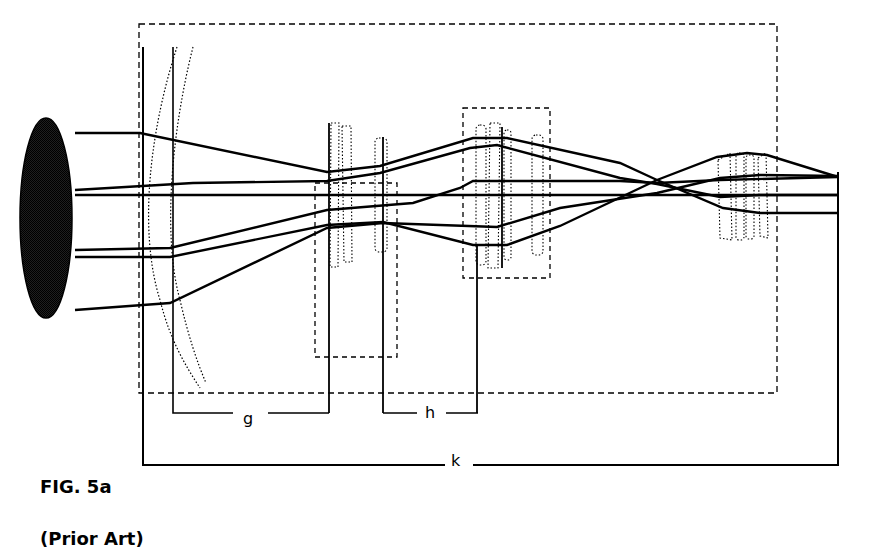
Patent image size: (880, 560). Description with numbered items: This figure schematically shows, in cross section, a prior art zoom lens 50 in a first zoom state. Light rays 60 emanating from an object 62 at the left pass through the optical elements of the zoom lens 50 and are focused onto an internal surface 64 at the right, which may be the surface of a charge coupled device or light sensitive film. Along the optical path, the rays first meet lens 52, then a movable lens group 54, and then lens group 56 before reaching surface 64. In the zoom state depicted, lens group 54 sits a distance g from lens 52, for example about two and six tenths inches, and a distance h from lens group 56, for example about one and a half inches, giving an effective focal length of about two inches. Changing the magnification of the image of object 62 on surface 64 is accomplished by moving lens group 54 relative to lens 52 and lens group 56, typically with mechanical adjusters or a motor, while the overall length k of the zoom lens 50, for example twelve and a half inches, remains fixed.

The zoom lens 50 is at (631, 396).
The lens 52 is at (190, 94).
The lens group 54 is at (369, 103).
The lens group 56 is at (522, 107).
The light rays 60 is at (113, 117).
The object 62 is at (57, 117).
The internal surface 64 is at (833, 180).